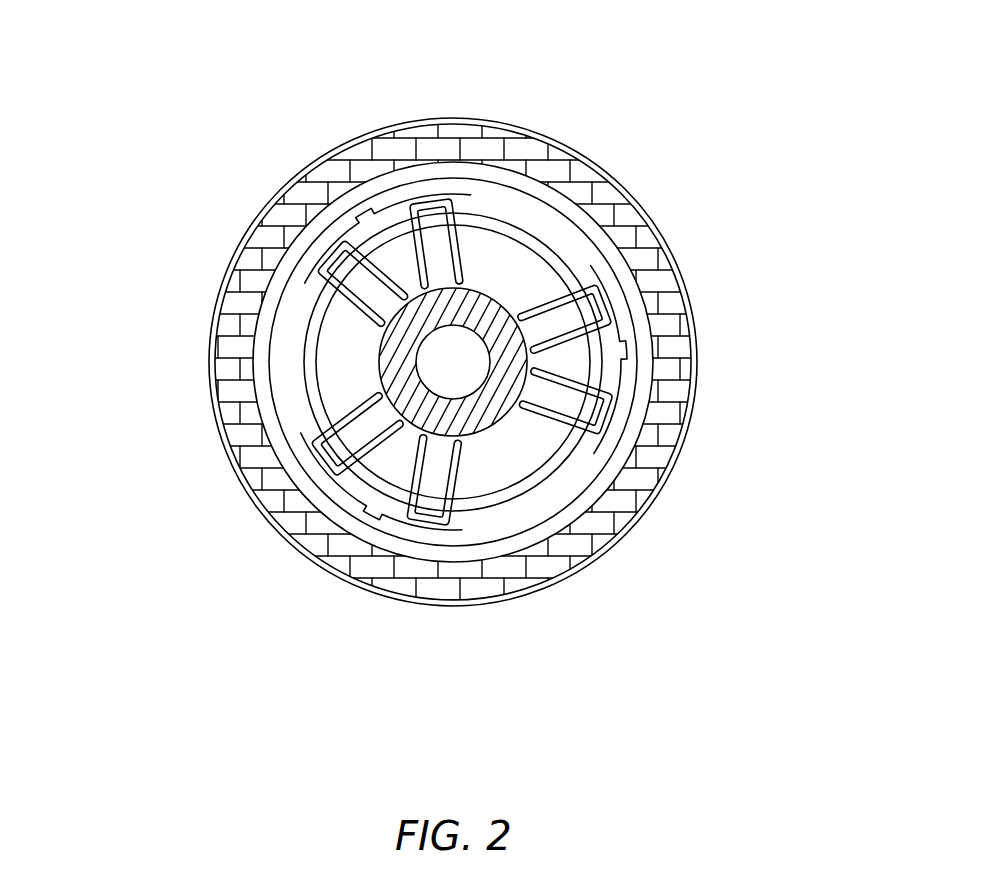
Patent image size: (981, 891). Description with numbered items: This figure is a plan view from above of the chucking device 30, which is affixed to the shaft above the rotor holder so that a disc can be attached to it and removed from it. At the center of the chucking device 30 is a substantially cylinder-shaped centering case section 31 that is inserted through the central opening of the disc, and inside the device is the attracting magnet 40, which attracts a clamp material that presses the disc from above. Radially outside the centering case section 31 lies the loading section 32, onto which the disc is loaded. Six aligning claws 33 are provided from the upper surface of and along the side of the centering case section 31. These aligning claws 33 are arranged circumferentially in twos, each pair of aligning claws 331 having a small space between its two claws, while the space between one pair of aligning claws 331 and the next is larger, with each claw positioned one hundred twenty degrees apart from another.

The chucking device 30 is at (81, 68).
The centering case section 31 is at (503, 267).
The loading section 32 is at (267, 237).
The aligning claw 33 is at (440, 240).
The pair of aligning claws 331 is at (375, 198).
The attracting magnet 40 is at (397, 363).